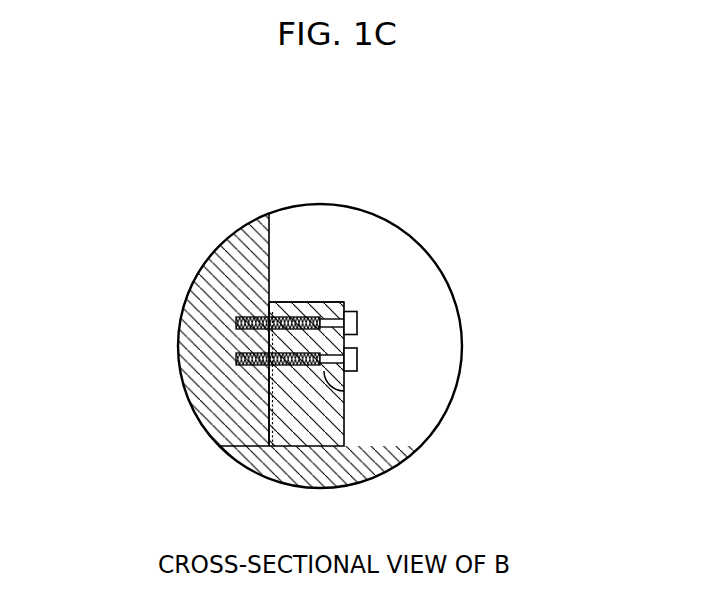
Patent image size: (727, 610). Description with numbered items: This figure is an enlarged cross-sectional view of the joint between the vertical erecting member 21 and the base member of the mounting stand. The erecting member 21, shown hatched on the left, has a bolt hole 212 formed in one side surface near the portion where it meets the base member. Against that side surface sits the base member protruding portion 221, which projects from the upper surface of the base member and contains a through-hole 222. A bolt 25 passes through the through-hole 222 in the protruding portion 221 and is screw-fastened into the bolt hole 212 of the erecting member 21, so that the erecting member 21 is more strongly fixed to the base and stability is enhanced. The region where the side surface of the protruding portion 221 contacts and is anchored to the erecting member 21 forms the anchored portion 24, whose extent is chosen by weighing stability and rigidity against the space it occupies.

The erecting member 21 is at (222, 278).
The bolt hole 212 is at (235, 328).
The anchored portion 24 is at (276, 301).
The through-hole 222 is at (337, 302).
The base member protruding portion 221 is at (347, 410).
The bolt 25 is at (357, 359).